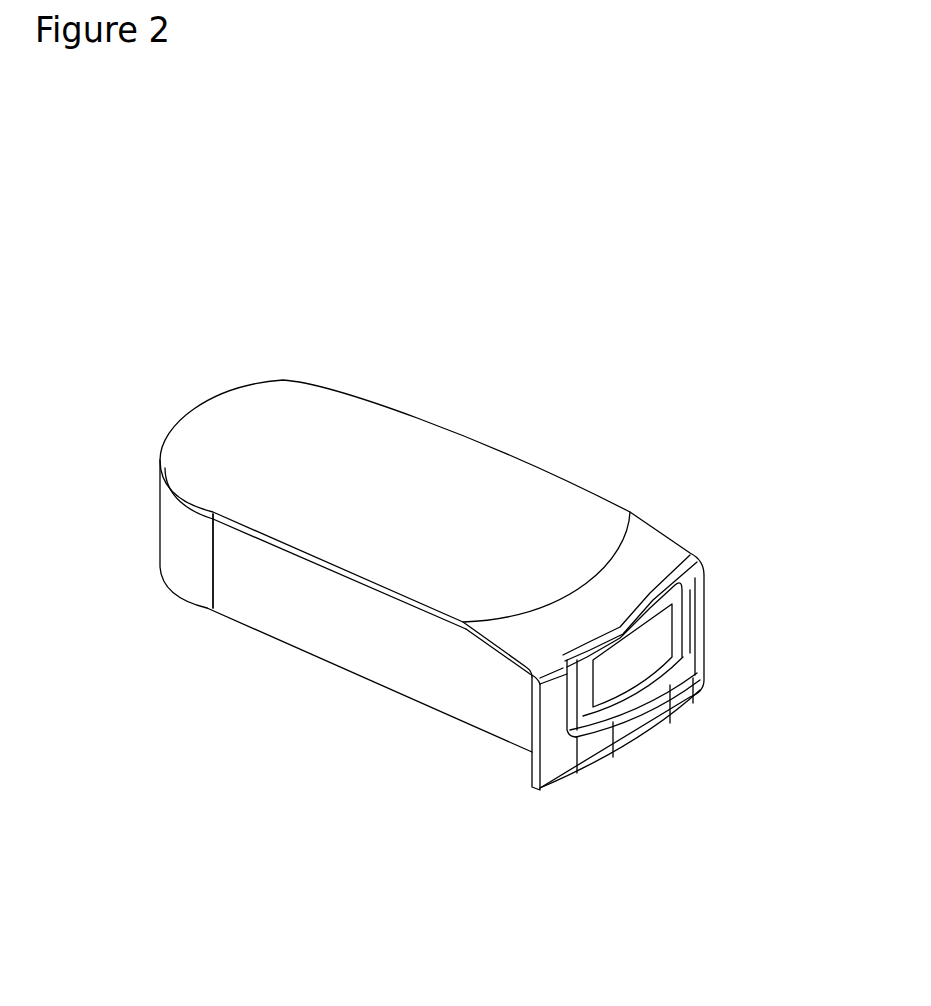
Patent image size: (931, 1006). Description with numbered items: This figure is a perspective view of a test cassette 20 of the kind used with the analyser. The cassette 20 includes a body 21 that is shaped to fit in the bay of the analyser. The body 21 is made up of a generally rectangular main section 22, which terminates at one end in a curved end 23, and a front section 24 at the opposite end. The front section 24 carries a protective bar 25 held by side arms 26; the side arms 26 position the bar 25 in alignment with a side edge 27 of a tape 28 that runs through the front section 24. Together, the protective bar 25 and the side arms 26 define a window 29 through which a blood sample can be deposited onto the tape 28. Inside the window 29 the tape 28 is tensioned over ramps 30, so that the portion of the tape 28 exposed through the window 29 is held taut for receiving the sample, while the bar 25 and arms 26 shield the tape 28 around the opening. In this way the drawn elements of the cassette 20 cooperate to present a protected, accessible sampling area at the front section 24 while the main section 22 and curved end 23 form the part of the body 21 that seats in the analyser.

The test cassette 20 is at (373, 430).
The body 21 is at (473, 467).
The main section 22 is at (368, 630).
The curved end 23 is at (190, 527).
The front section 24 is at (527, 642).
The protective bar 25 is at (630, 727).
The side arms 26 is at (530, 722).
The side edge 27 is at (637, 670).
The tape 28 is at (648, 647).
The window 29 is at (620, 690).
The ramps 30 is at (632, 610).